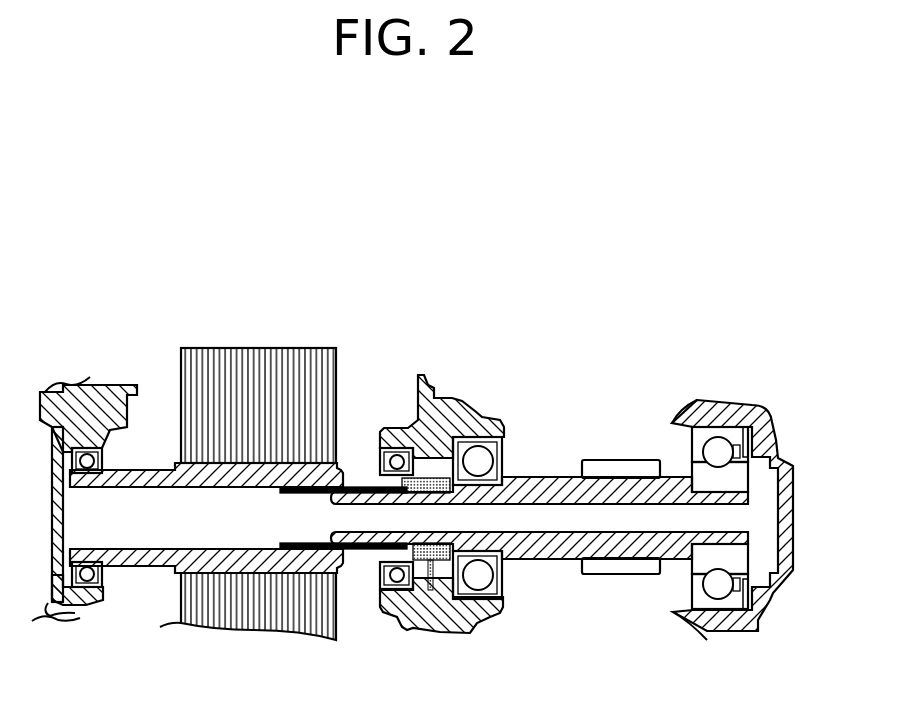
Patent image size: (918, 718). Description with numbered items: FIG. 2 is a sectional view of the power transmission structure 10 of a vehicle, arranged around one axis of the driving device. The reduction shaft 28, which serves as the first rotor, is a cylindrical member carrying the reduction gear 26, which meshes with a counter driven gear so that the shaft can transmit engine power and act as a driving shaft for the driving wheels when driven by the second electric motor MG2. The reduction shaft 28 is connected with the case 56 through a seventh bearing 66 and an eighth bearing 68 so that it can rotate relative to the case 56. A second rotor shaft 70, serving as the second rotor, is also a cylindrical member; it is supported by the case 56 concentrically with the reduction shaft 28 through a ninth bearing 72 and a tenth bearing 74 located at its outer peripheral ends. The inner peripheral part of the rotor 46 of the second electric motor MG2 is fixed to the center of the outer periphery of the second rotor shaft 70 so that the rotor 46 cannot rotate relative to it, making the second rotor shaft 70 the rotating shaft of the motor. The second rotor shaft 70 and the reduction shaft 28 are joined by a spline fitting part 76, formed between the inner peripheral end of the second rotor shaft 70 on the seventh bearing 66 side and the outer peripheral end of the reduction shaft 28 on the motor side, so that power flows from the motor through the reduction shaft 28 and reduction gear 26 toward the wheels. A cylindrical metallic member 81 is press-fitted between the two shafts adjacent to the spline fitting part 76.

The power transmission structure 10 is at (572, 218).
The second electric motor MG2 is at (220, 301).
The rotor 46 is at (318, 357).
The case 56 is at (100, 390).
The second rotor shaft 70 is at (167, 468).
The ninth bearing 72 is at (105, 585).
The tenth bearing 74 is at (380, 448).
The spline fitting part 76 is at (362, 560).
The seventh bearing 66 is at (493, 475).
The eighth bearing 68 is at (702, 567).
The reduction shaft 28 is at (545, 487).
The reduction gear 26 is at (635, 468).
The cylindrical metallic member 81 is at (432, 590).